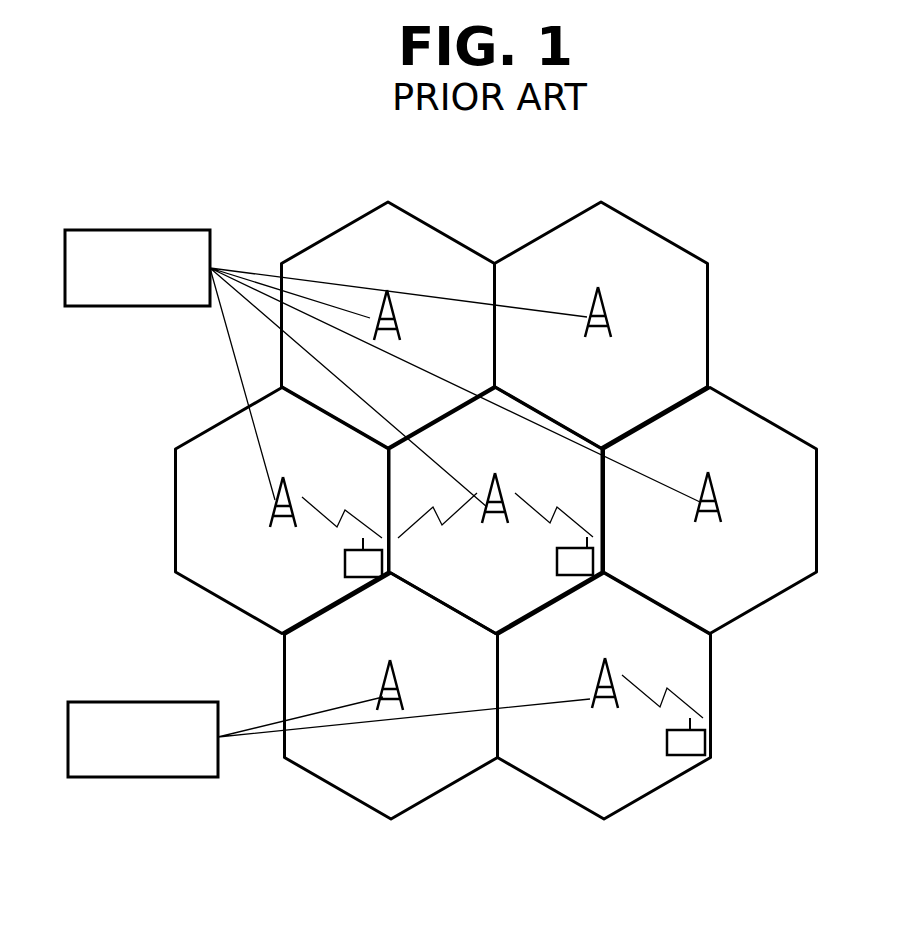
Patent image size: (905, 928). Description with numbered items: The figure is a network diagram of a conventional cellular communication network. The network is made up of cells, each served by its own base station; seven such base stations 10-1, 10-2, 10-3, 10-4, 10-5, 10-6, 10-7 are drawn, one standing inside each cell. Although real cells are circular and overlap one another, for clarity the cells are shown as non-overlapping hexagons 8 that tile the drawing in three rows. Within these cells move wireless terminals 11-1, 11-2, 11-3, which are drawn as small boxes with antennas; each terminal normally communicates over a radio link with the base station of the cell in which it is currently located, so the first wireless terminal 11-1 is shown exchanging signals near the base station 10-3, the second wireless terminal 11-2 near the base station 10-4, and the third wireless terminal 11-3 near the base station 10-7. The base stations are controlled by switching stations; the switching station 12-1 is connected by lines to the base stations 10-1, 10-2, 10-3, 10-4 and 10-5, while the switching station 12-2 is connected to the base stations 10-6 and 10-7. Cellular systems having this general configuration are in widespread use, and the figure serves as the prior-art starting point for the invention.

The hexagon 8 is at (692, 333).
The base station 10-1 is at (390, 299).
The base station 10-2 is at (601, 299).
The base station 10-3 is at (286, 489).
The base station 10-4 is at (498, 484).
The base station 10-5 is at (711, 485).
The base station 10-6 is at (393, 673).
The base station 10-7 is at (607, 672).
The wireless terminal 11-1 is at (343, 563).
The wireless terminal 11-2 is at (557, 561).
The wireless terminal 11-3 is at (667, 742).
The switching station 12-1 is at (143, 230).
The switching station 12-2 is at (143, 702).